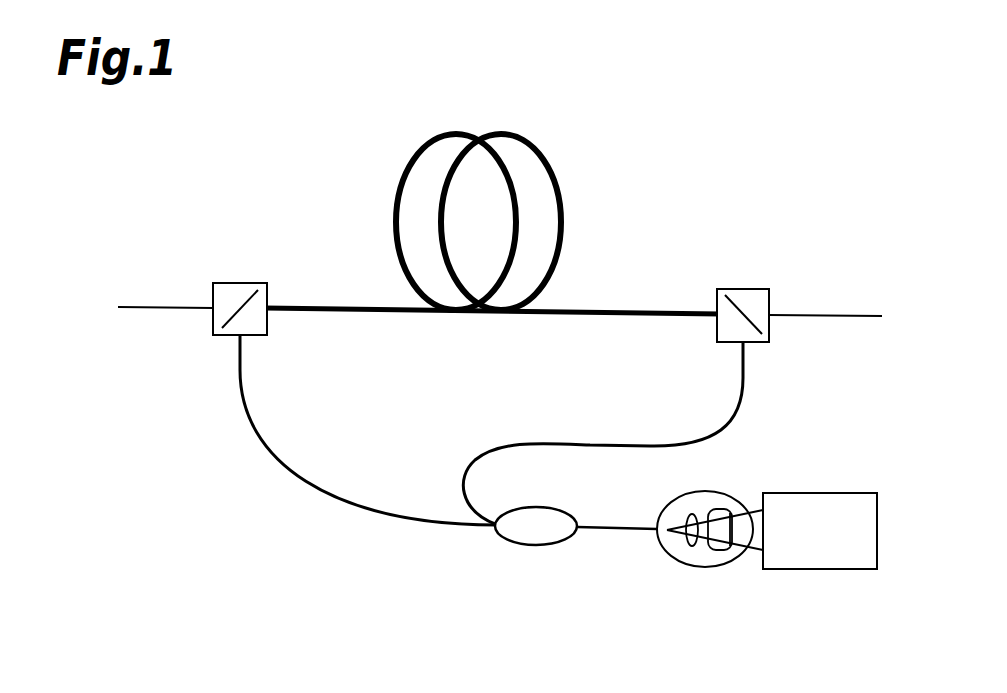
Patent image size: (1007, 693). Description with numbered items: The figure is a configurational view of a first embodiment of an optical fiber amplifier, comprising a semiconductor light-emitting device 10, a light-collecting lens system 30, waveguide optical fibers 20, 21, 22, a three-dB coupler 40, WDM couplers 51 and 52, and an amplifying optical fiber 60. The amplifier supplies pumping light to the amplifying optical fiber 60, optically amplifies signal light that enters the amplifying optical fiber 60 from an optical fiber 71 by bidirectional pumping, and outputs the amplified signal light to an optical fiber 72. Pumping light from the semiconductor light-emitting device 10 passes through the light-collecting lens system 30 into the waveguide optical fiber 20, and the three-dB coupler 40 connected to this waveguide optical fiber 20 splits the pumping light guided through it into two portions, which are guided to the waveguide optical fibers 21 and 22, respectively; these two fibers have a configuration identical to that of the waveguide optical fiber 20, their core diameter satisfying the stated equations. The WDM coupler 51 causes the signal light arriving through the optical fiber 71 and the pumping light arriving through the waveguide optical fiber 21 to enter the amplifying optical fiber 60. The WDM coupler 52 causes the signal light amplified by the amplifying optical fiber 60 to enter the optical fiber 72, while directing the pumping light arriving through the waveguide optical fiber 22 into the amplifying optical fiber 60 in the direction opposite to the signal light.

The semiconductor light-emitting device 10 is at (815, 570).
The waveguide optical fiber 20 is at (613, 531).
The waveguide optical fiber 21 is at (330, 493).
The waveguide optical fiber 22 is at (745, 388).
The light-collecting lens system 30 is at (705, 567).
The 3-dB coupler 40 is at (533, 546).
The WDM coupler 51 is at (240, 283).
The WDM coupler 52 is at (745, 289).
The amplifying optical fiber 60 is at (558, 187).
The optical fiber 71 is at (150, 307).
The optical fiber 72 is at (843, 315).